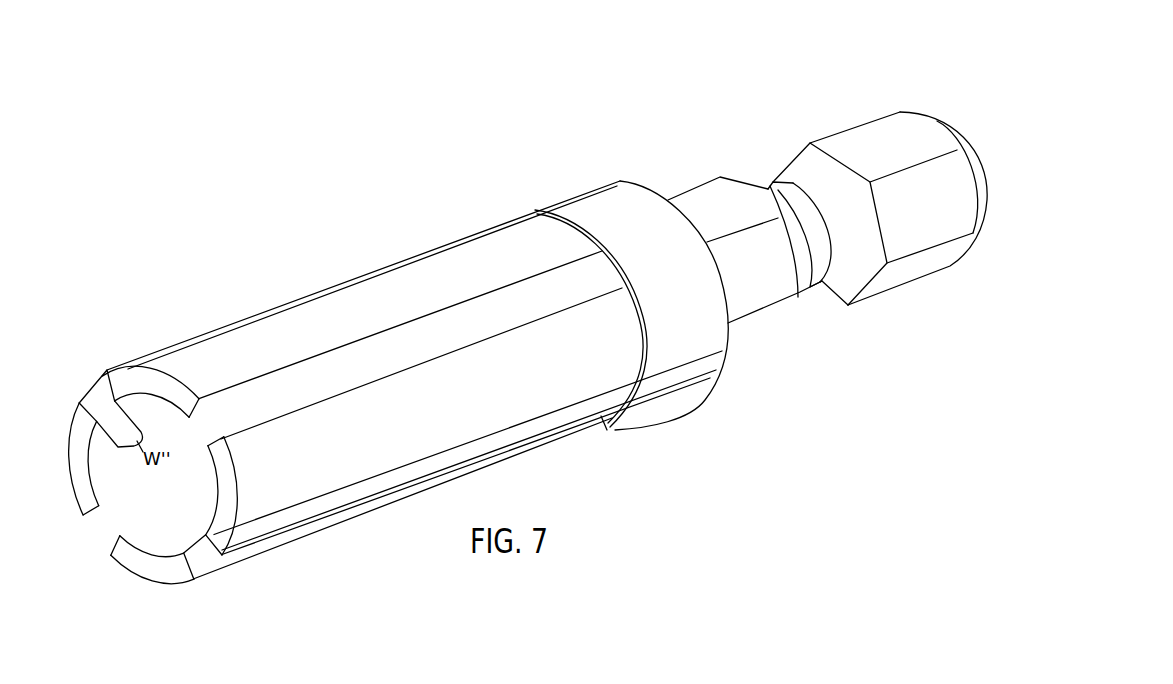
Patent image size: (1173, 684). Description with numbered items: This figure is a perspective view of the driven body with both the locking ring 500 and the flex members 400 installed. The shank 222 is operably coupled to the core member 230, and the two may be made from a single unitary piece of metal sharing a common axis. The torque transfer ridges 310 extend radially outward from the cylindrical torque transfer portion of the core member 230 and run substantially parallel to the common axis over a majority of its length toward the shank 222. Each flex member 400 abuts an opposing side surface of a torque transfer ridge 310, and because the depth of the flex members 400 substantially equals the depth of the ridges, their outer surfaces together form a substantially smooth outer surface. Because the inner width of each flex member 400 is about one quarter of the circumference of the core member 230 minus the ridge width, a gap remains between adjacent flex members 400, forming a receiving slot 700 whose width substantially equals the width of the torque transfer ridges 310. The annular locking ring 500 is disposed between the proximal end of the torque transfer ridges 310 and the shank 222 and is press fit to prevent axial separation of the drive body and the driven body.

The shank 222 is at (913, 178).
The core member 230 is at (743, 232).
The torque transfer ridges 310 is at (473, 307).
The flex member 400 is at (288, 316).
The locking ring 500 is at (698, 381).
The receiving slot 700 is at (99, 389).